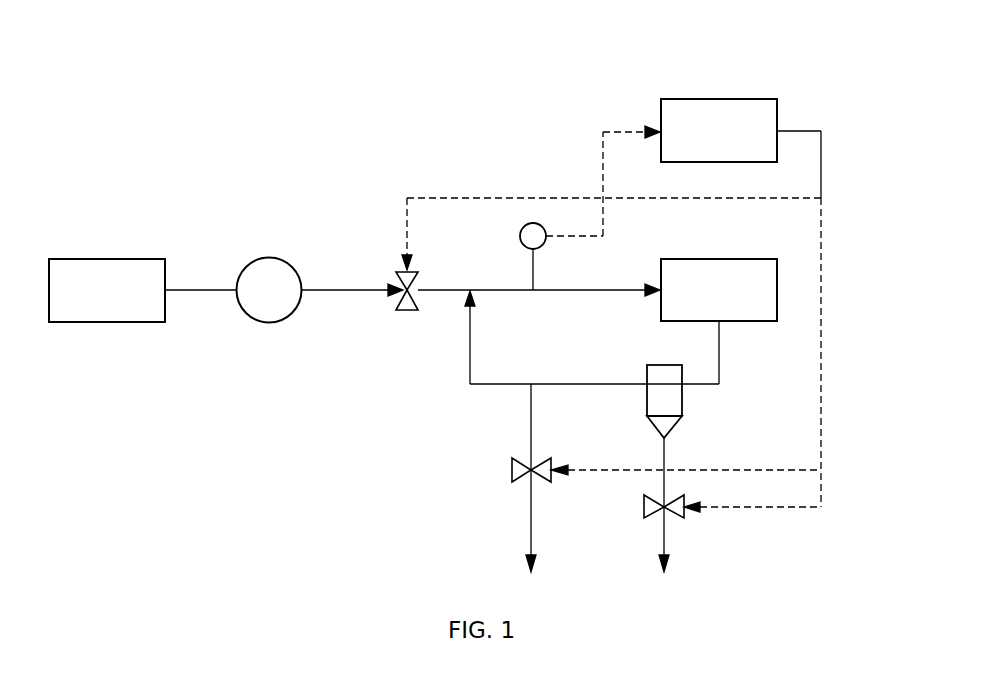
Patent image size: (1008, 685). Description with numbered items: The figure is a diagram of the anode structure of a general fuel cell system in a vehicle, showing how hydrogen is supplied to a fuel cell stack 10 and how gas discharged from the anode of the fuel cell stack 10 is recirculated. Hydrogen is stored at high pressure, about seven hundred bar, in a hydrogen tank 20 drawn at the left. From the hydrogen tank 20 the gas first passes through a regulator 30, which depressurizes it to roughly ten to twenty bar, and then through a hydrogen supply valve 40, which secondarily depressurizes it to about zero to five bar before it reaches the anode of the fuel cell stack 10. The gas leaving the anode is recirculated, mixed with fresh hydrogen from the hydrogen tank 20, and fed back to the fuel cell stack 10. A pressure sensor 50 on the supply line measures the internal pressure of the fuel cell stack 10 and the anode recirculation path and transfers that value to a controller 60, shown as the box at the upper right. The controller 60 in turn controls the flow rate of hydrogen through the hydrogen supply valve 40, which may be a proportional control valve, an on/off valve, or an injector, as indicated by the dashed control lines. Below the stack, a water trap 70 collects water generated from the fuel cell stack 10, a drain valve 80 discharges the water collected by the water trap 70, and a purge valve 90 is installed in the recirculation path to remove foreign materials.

The fuel cell stack 10 is at (777, 290).
The hydrogen tank 20 is at (108, 259).
The regulator 30 is at (270, 258).
The hydrogen supply valve 40 is at (400, 312).
The pressure sensor 50 is at (530, 222).
The controller 60 is at (717, 99).
The water trap 70 is at (683, 402).
The drain valve 80 is at (644, 508).
The purge valve 90 is at (512, 468).